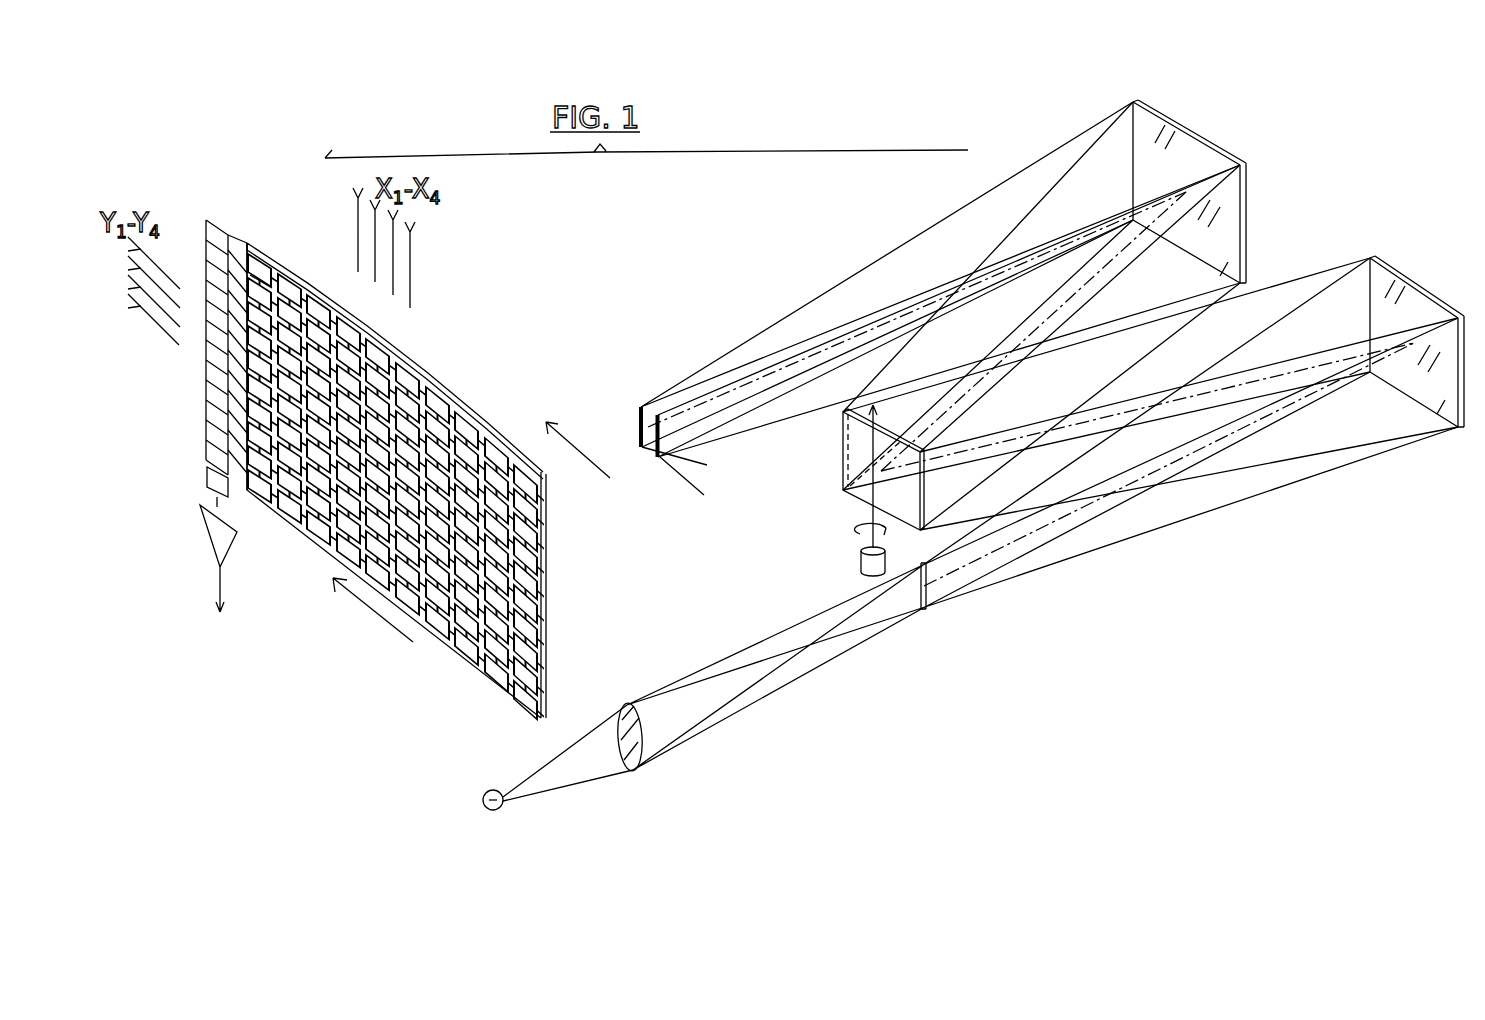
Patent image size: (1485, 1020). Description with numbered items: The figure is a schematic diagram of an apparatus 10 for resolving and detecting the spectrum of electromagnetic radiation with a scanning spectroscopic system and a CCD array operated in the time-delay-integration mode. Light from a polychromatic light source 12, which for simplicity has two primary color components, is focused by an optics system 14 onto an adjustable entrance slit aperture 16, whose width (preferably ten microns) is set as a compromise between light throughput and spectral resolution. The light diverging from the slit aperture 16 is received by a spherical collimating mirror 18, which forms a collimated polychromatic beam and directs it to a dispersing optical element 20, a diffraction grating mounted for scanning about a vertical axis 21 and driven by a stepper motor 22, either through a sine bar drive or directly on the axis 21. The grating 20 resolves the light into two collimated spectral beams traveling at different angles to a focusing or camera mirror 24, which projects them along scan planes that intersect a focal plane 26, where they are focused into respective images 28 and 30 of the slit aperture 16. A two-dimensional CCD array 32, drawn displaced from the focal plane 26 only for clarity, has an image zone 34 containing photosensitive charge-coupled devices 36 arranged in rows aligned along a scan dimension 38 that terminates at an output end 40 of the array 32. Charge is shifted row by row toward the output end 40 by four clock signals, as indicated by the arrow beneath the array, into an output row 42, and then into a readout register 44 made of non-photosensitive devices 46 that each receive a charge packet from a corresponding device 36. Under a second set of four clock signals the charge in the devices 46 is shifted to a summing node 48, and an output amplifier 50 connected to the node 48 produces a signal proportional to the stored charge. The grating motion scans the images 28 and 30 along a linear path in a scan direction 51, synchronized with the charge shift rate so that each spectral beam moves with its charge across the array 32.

The apparatus 10 is at (674, 239).
The polychromatic light source 12 is at (500, 810).
The optics system 14 is at (636, 770).
The entrance slit aperture 16 is at (926, 610).
The spherical collimating mirror 18 is at (1407, 272).
The dispersing optical element 20 is at (843, 492).
The vertical axis 21 is at (870, 452).
The stepper motor 22 is at (862, 560).
The focusing mirror 24 is at (1192, 132).
The focal plane 26 is at (704, 458).
The image 28 is at (639, 406).
The image 30 is at (652, 457).
The CCD array 32 is at (444, 461).
The image zone 34 is at (495, 685).
The charge-coupled devices 36 is at (307, 517).
The scan dimension 38 is at (446, 372).
The output end 40 is at (246, 243).
The output row 42 is at (267, 297).
The readout register 44 is at (218, 222).
The non-photosensitive charge-coupled devices 46 is at (205, 237).
The summing node 48 is at (208, 475).
The output amplifier 50 is at (217, 533).
The scan direction 51 is at (607, 473).